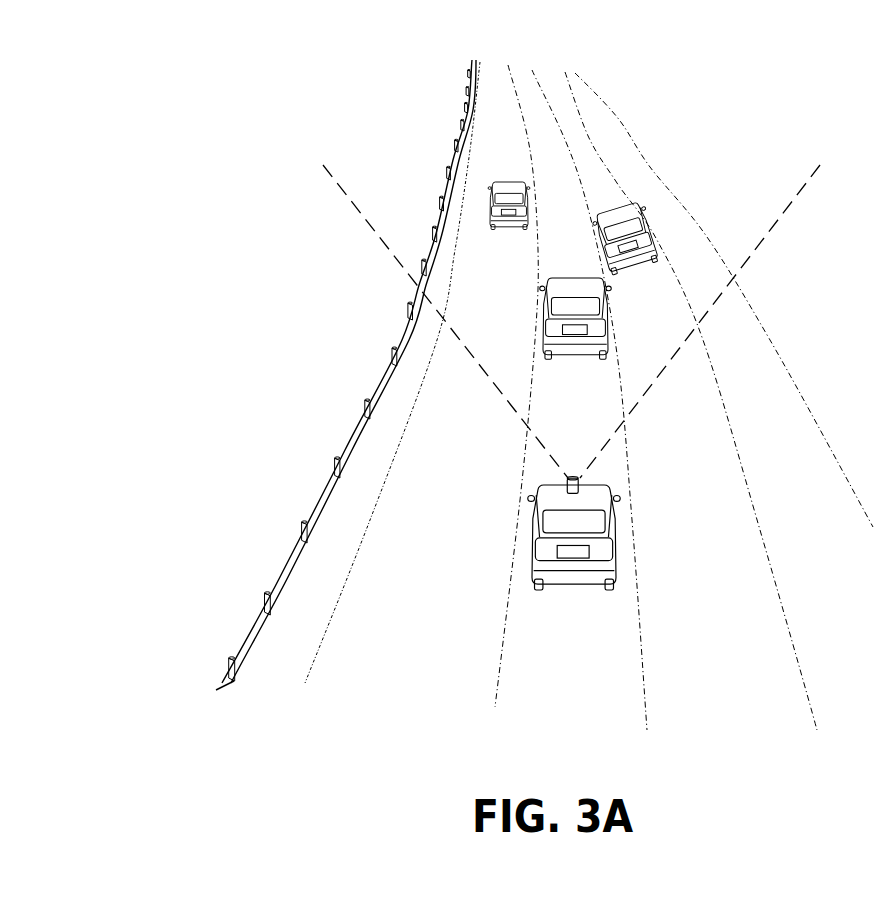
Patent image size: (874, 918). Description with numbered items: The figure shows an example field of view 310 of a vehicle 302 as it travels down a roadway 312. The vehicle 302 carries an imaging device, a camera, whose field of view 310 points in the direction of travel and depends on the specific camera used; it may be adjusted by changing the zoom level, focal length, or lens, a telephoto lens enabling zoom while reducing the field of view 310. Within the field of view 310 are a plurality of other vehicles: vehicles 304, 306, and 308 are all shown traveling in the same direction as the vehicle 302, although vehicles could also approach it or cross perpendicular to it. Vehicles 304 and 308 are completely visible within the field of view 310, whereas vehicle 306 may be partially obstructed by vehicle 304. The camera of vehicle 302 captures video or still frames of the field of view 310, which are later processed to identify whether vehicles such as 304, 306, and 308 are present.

The vehicle 302 is at (533, 548).
The vehicle 304 is at (607, 333).
The vehicle 306 is at (653, 246).
The vehicle 308 is at (490, 208).
The field of view 310 is at (495, 385).
The roadway 312 is at (589, 396).